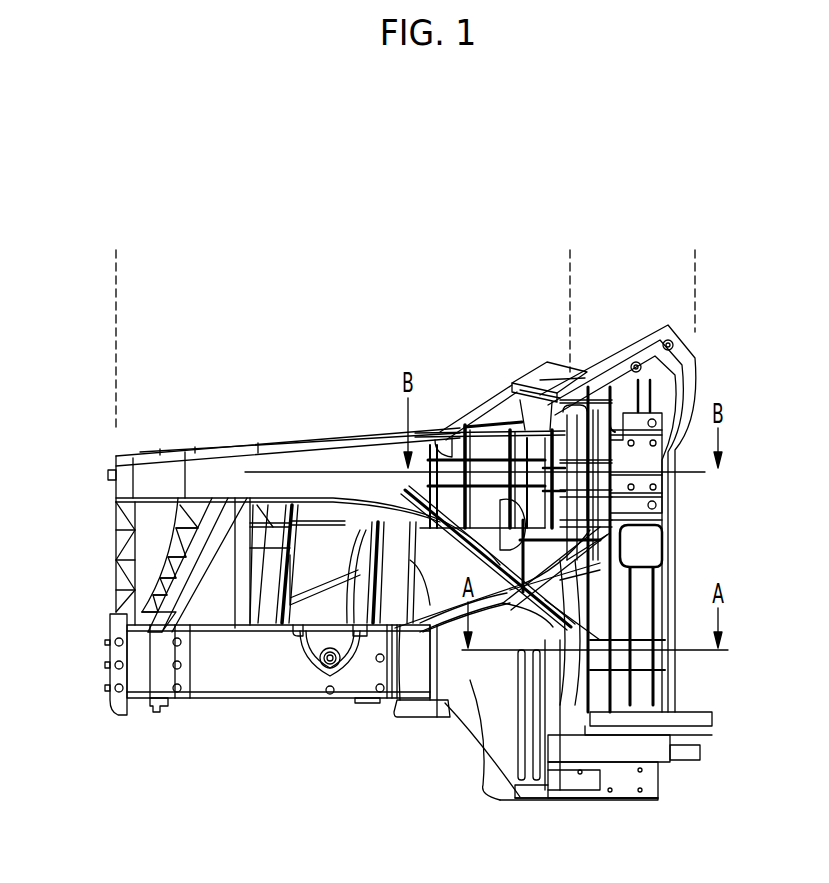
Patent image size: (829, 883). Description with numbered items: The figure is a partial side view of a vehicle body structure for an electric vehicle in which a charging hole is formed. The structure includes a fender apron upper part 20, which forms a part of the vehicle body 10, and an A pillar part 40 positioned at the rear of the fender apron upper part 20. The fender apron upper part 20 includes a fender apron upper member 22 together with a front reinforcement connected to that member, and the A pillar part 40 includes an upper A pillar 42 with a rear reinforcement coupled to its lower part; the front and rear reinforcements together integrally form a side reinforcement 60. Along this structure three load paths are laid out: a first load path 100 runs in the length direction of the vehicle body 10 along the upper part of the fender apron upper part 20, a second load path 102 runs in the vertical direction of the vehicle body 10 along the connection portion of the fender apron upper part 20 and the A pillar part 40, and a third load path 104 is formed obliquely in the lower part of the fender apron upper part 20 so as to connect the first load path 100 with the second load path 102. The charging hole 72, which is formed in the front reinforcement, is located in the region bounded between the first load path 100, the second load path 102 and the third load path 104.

The vehicle body 10 is at (535, 805).
The fender apron upper part 20 is at (116, 260).
The fender apron upper member 22 is at (268, 503).
The A pillar part 40 is at (695, 260).
The upper A pillar 42 is at (665, 488).
The side reinforcement 60 is at (483, 790).
The charging hole 72 is at (480, 503).
The first load path 100 is at (448, 473).
The second load path 102 is at (600, 673).
The third load path 104 is at (414, 678).